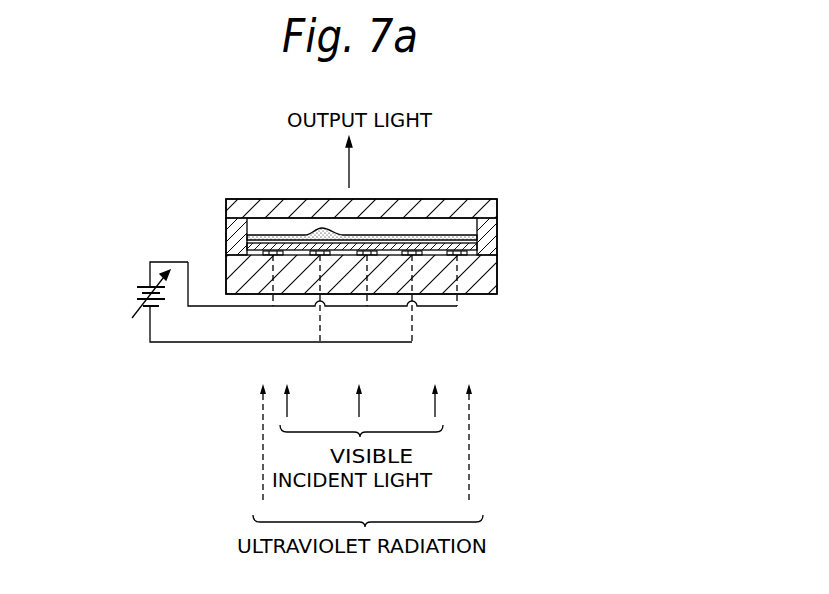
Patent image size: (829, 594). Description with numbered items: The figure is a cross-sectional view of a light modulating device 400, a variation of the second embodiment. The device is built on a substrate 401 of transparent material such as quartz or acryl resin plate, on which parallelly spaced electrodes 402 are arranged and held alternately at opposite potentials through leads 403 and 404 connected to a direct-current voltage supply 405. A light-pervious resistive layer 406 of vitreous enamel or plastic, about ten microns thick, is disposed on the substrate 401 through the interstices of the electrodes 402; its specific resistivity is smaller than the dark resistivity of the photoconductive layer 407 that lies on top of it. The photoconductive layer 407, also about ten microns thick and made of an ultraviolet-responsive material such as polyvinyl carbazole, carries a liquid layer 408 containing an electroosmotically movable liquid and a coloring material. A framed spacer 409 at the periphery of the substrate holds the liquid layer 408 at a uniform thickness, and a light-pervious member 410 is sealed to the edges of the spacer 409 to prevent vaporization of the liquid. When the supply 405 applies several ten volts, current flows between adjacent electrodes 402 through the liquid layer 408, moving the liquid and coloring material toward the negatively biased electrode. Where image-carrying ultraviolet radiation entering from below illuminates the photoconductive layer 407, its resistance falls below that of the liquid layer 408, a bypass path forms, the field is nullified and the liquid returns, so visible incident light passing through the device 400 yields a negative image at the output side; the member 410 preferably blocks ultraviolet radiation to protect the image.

The light modulating device 400 is at (470, 160).
The substrate 401 is at (497, 290).
The electrodes 402 is at (490, 260).
The lead 403 is at (445, 307).
The lead 404 is at (400, 342).
The direct-current voltage supply 405 is at (124, 298).
The light-pervious resistive layer 406 is at (480, 256).
The photoconductive layer 407 is at (480, 245).
The liquid layer 408 is at (480, 236).
The spacer 409 is at (232, 235).
The light-pervious member 410 is at (306, 199).